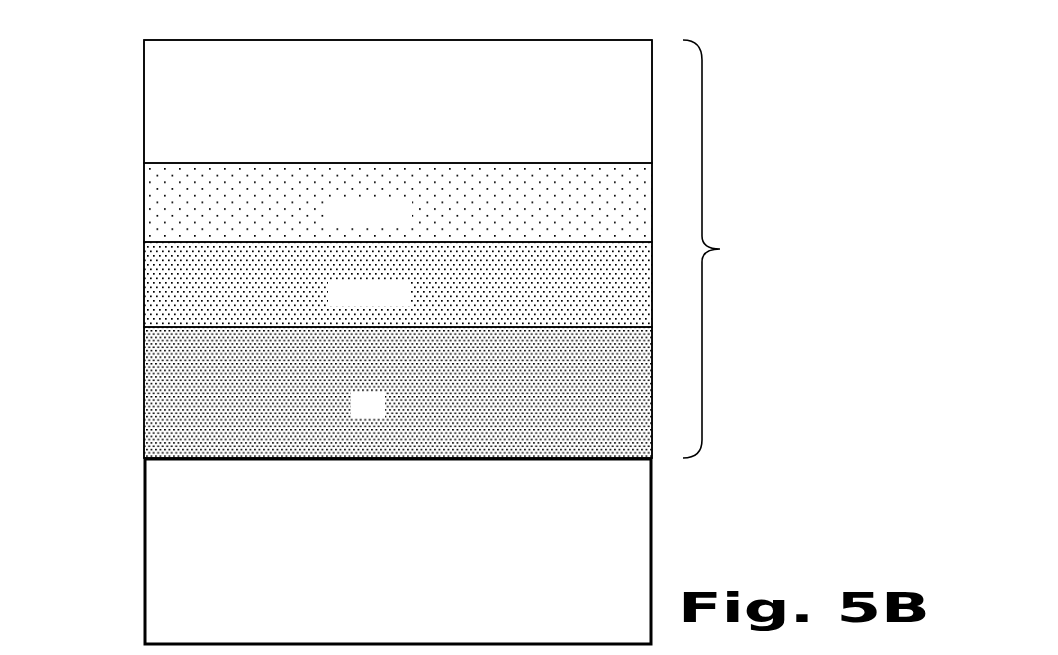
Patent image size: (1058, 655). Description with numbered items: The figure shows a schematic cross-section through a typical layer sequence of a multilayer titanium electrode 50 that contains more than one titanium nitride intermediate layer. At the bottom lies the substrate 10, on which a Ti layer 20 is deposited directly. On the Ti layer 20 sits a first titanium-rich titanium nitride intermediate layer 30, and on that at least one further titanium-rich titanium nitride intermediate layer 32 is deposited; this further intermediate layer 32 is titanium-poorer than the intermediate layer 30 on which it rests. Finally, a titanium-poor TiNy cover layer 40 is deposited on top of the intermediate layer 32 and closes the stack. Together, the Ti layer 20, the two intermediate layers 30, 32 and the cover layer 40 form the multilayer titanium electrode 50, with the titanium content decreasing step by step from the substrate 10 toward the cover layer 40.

The substrate 10 is at (159, 550).
The Ti layer 20 is at (159, 410).
The first titanium-rich TiNxn intermediate layer 30 is at (159, 292).
The further titanium-rich TiNxn+1 intermediate layer 32 is at (159, 190).
The titanium-poor TiNy cover layer 40 is at (159, 76).
The multilayer titanium electrode 50 is at (457, 249).